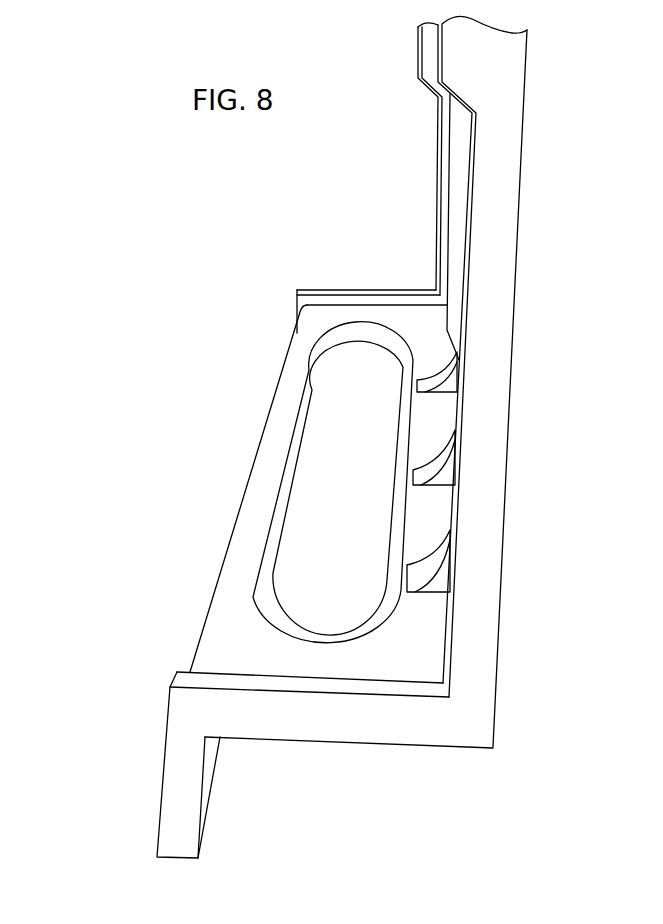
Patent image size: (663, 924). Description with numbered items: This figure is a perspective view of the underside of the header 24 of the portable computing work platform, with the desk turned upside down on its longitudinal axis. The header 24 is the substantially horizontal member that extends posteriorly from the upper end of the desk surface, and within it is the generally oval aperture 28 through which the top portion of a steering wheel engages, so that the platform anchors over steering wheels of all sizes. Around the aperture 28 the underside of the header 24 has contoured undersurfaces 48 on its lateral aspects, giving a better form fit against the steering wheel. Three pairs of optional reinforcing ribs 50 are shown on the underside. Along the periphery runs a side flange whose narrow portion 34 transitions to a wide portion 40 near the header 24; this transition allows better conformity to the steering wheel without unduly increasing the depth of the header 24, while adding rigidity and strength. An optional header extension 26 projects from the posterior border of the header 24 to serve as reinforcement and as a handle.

The header member 24 is at (242, 650).
The header extension 26 is at (165, 747).
The oval aperture 28 is at (338, 488).
The narrow portion of side flange 34 is at (380, 293).
The wide portion of side flange 40 is at (480, 70).
The contoured undersurfaces 48 is at (338, 343).
The reinforcing ribs 50 is at (440, 560).